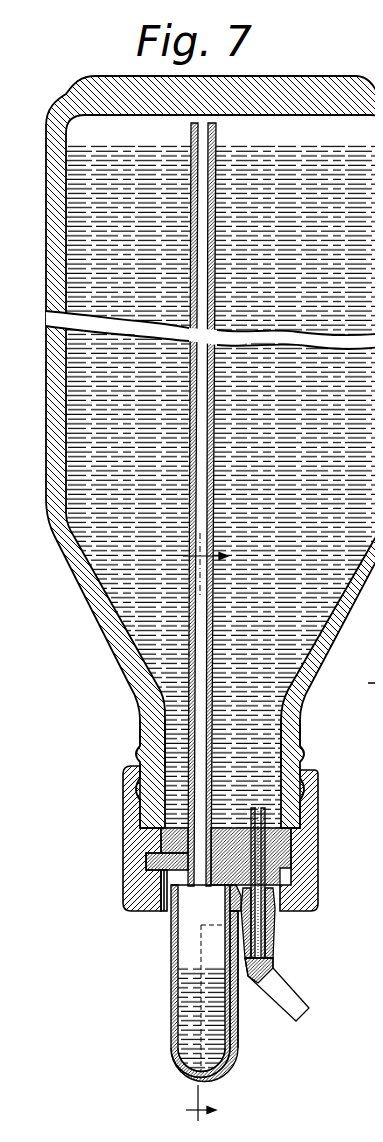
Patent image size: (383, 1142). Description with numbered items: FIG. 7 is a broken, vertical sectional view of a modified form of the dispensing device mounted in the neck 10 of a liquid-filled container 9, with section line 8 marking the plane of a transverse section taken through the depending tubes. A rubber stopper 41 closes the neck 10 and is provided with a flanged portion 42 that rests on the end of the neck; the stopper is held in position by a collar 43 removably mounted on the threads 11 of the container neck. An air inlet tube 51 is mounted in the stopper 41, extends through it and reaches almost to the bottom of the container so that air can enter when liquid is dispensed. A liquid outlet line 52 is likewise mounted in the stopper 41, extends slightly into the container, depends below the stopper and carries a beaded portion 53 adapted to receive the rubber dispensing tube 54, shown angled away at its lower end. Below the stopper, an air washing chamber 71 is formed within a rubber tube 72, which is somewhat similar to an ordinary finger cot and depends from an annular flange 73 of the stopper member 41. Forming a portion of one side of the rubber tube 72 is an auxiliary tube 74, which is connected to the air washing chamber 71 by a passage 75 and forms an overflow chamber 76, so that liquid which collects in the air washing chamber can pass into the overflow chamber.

The section line 8- 8 is at (198, 827).
The container 9 is at (323, 640).
The neck 10 is at (288, 730).
The threads 11 is at (293, 775).
The rubber stopper 41 is at (160, 822).
The flanged portion 42 is at (153, 850).
The collar 43 is at (303, 843).
The air inlet tube 51 is at (180, 597).
The liquid outlet line 52 is at (290, 811).
The beaded portion 53 is at (262, 910).
The rubber dispensing tube 54 is at (278, 984).
The air washing chamber 71 is at (175, 930).
The rubber tube 72 is at (165, 1000).
The annular flange 73 is at (155, 868).
The auxiliary tube 74 is at (222, 1030).
The passage 75 is at (228, 1055).
The overflow chamber 76 is at (222, 1042).